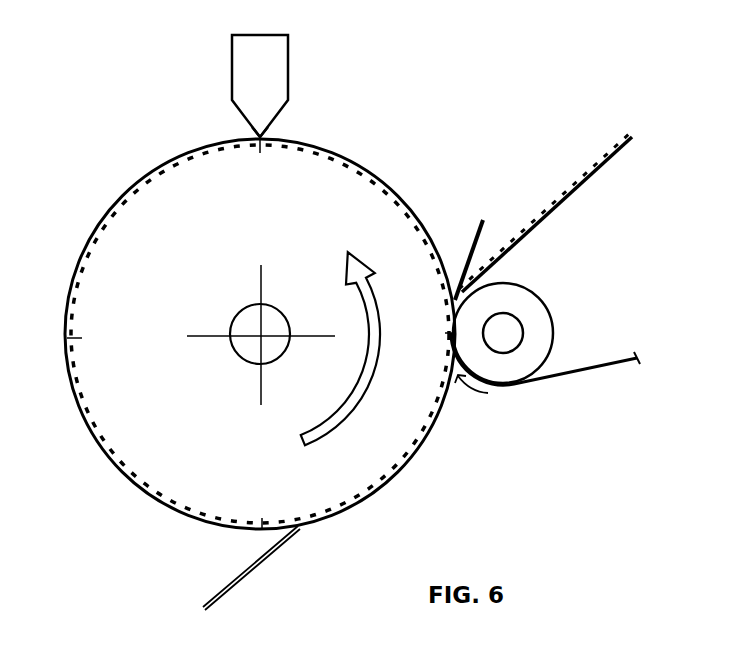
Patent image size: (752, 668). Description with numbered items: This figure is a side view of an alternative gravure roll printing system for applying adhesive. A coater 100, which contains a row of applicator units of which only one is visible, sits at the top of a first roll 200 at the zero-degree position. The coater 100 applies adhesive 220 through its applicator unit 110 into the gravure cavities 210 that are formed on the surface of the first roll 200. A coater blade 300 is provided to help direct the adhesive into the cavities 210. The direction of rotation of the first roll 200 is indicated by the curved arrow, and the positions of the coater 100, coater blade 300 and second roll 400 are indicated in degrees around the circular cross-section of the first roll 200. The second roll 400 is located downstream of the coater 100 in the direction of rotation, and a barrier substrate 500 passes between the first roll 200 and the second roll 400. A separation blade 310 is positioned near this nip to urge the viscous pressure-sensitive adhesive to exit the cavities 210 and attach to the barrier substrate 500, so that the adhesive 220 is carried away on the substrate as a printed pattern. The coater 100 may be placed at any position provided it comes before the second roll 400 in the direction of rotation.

The coater 100 is at (278, 69).
The applicator unit 110 is at (262, 135).
The first roll 200 is at (118, 255).
The gravure cavities 210 is at (158, 192).
The adhesive 220 is at (172, 161).
The coater blade 300 is at (250, 572).
The separation blade 310 is at (455, 245).
The second roll 400 is at (540, 322).
The barrier substrate 500 is at (578, 196).